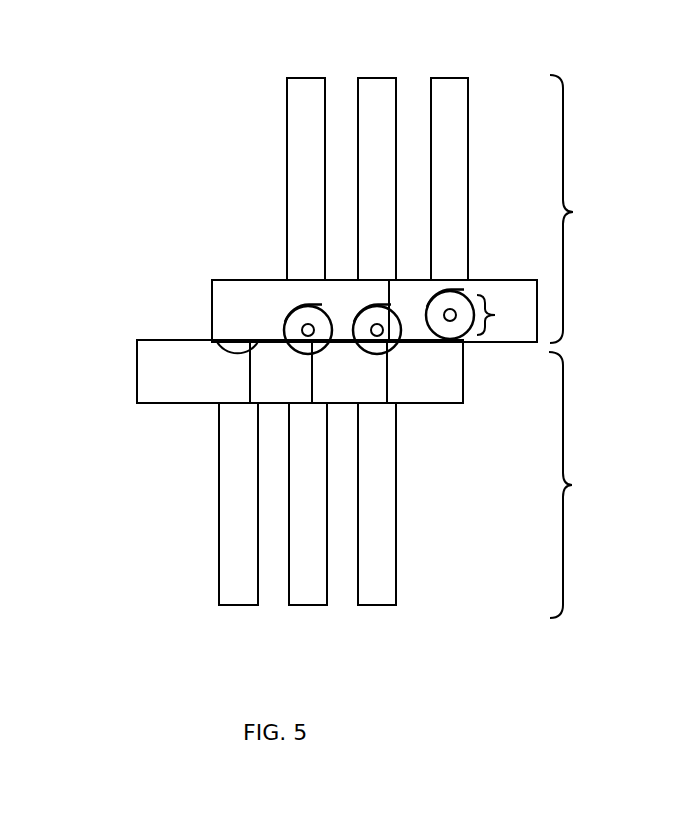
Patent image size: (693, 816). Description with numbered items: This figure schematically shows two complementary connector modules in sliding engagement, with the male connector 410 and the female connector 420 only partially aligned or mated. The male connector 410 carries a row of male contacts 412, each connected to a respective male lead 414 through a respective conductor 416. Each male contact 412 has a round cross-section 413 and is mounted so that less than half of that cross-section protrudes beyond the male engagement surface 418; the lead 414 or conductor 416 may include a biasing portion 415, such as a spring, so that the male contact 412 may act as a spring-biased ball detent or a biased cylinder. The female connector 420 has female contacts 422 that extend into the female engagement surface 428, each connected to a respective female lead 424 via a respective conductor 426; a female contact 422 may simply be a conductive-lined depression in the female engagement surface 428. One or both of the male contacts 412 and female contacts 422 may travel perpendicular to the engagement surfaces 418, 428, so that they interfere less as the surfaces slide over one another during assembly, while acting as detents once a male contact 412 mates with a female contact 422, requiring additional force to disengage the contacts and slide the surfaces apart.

The male connector 410 is at (573, 212).
The male contact 412 is at (292, 311).
The round cross-section 413 is at (495, 315).
The male lead 414 is at (288, 95).
The biasing portion 415 is at (443, 292).
The conductor 416 is at (257, 239).
The male engagement surface 418 is at (485, 352).
The female connector 420 is at (572, 485).
The female contact 422 is at (225, 355).
The female lead 424 is at (382, 577).
The conductor 426 is at (387, 377).
The female engagement surface 428 is at (145, 328).